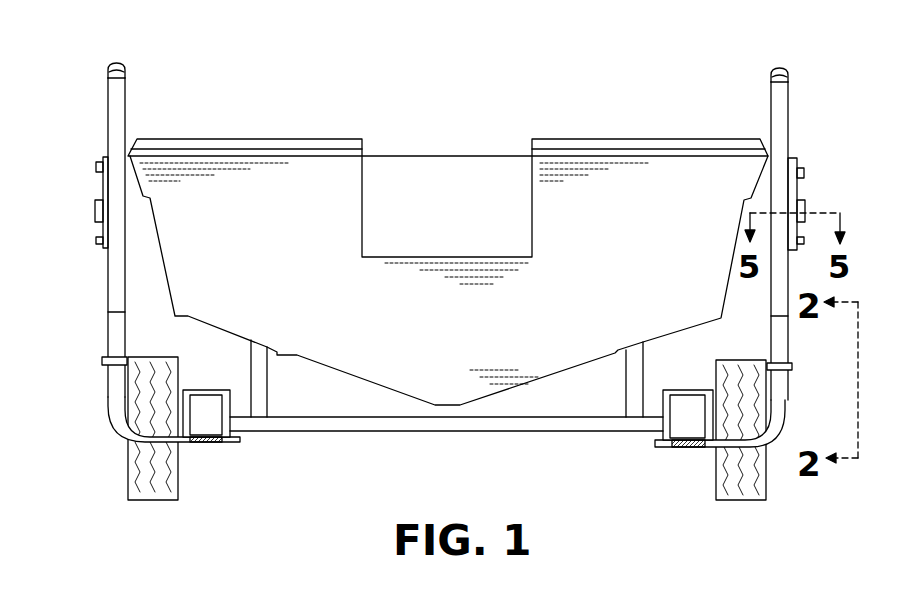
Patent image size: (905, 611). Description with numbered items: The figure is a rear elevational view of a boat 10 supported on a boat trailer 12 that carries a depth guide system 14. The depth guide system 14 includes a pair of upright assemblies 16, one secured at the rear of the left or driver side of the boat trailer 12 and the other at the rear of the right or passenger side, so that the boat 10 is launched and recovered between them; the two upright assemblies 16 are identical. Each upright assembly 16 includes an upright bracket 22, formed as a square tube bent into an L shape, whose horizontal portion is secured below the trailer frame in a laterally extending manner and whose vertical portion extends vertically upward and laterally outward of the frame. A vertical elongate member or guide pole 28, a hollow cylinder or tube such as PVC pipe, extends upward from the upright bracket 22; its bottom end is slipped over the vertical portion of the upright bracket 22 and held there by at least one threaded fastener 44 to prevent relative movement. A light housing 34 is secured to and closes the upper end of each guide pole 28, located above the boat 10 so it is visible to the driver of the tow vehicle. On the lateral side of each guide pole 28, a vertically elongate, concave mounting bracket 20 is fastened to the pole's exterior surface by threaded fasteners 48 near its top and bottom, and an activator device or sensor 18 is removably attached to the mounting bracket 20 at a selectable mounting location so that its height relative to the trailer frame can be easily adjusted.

The boat 10 is at (246, 130).
The boat trailer 12 is at (151, 506).
The depth guide system 14 is at (102, 110).
The upright assembly 16 is at (108, 440).
The activator device or sensor 18 is at (95, 210).
The mounting bracket 20 is at (797, 186).
The upright bracket 22 is at (110, 410).
The vertical elongate member or guide pole 28 is at (107, 91).
The light housing 34 is at (117, 63).
The threaded fastener 44 is at (793, 364).
The threaded fastener 48 is at (97, 167).